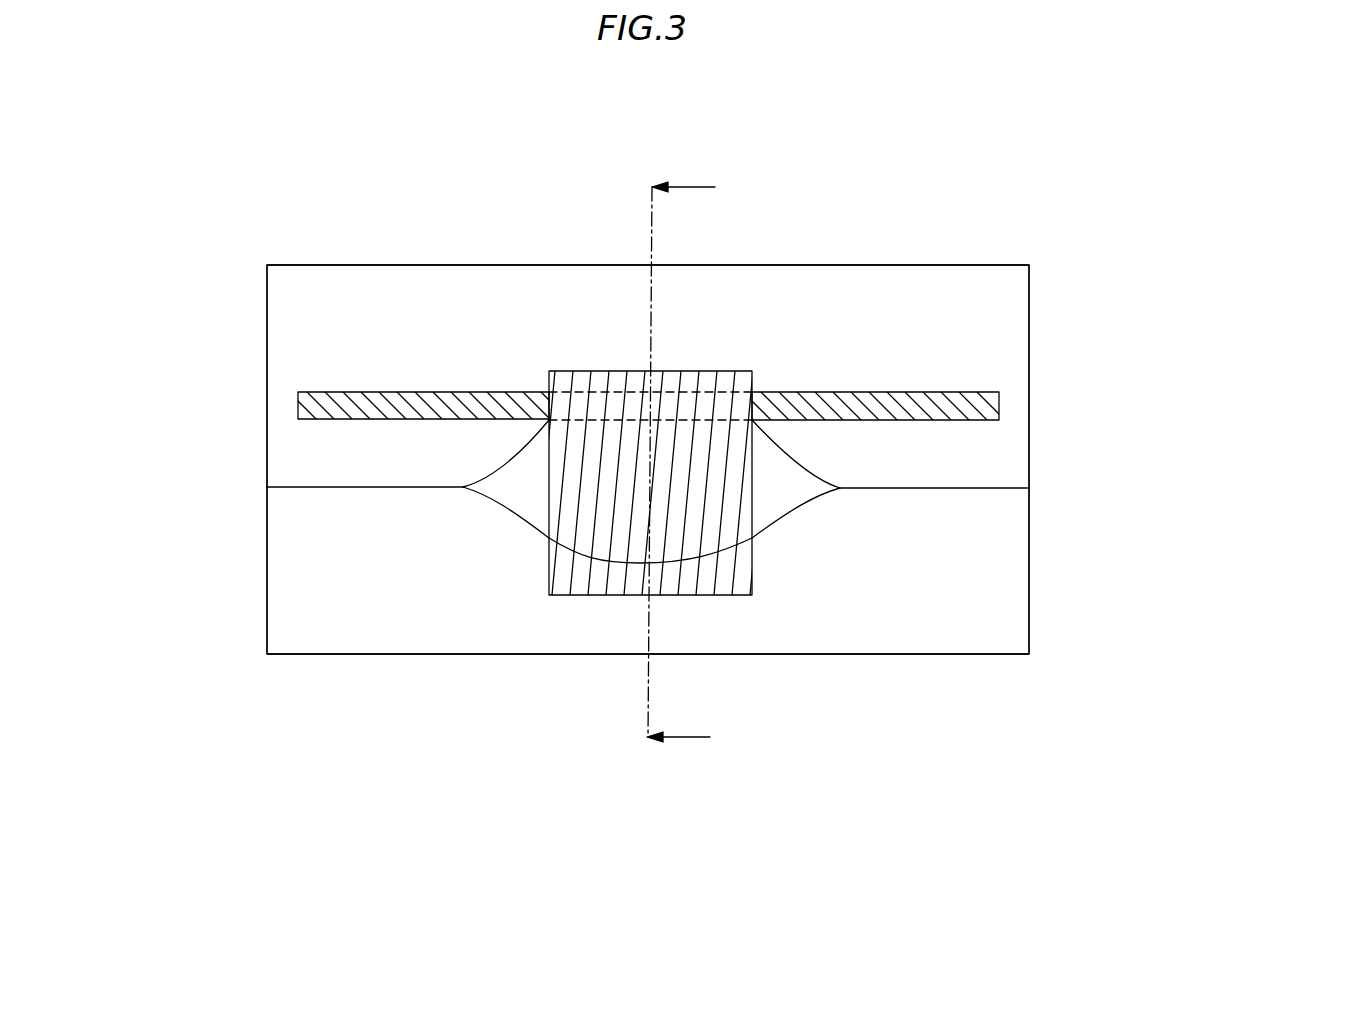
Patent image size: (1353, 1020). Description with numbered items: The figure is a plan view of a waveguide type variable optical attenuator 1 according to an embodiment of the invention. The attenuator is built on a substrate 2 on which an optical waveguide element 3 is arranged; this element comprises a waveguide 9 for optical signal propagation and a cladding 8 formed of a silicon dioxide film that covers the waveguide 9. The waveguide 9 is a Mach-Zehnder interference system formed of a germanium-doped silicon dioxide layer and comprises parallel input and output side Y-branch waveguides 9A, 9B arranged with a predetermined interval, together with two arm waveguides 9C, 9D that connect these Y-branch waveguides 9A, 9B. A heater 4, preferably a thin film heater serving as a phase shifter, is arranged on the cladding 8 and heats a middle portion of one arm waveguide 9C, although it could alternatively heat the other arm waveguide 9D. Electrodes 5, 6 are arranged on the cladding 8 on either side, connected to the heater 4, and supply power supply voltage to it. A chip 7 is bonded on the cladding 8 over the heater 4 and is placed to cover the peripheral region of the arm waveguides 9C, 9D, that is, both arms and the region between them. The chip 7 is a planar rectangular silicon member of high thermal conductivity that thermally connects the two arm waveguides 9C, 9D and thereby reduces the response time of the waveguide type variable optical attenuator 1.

The waveguide type variable optical attenuator 1 is at (776, 203).
The substrate 2 is at (292, 655).
The optical waveguide element 3 is at (1045, 768).
The heater 4 is at (573, 403).
The electrode 5 is at (360, 392).
The electrode 6 is at (973, 393).
The chip 7 is at (618, 370).
The cladding 8 is at (993, 642).
The waveguide 9 is at (774, 550).
The input side Y-branch waveguide 9A is at (417, 487).
The output side Y-branch waveguide 9B is at (873, 489).
The arm waveguide 9C is at (783, 452).
The arm waveguide 9D is at (533, 530).